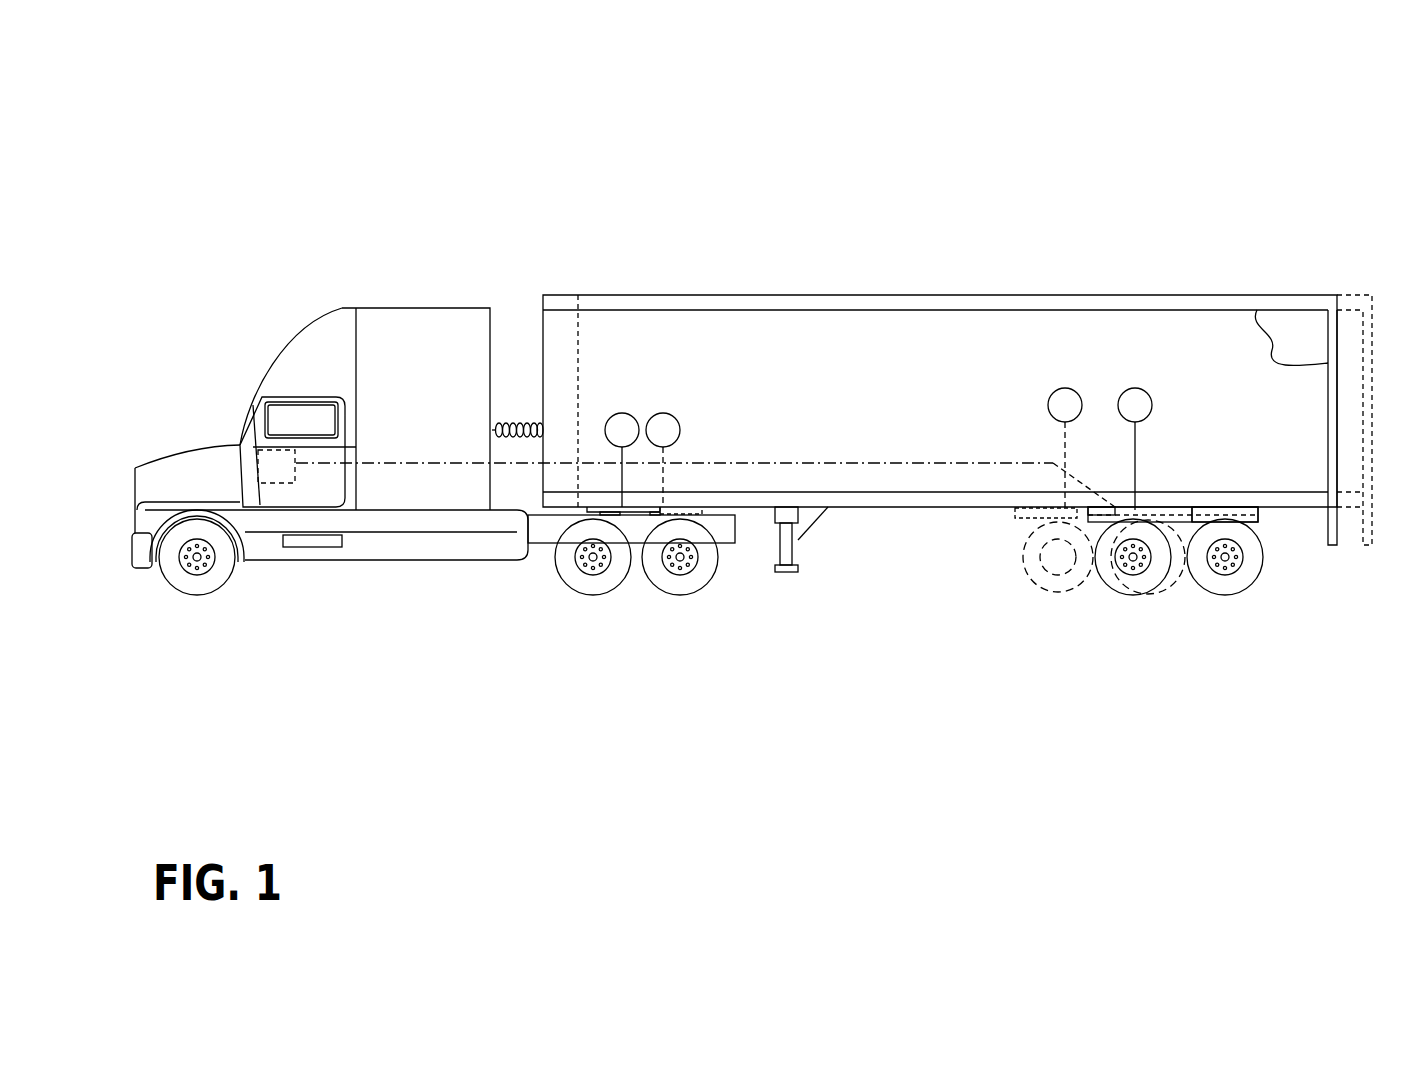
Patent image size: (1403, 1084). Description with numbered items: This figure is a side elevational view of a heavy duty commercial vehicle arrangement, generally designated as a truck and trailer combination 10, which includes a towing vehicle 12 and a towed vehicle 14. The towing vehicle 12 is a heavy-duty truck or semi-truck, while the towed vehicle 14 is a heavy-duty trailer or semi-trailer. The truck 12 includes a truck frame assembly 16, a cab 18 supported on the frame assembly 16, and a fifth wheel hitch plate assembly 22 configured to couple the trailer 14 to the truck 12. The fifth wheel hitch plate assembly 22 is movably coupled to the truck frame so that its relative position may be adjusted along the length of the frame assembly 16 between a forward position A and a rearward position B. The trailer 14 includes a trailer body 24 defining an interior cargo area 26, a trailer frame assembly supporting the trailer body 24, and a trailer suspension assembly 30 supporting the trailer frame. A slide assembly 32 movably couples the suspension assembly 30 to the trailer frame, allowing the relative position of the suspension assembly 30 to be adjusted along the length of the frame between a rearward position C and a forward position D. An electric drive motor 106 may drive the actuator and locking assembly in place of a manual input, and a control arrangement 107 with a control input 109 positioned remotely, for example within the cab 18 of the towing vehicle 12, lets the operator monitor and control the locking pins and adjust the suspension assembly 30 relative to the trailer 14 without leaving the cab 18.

The truck and trailer combination 10 is at (622, 195).
The towing vehicle 12 is at (382, 306).
The towed vehicle 14 is at (768, 293).
The truck frame assembly 16 is at (555, 543).
The cab 18 is at (247, 423).
The fifth wheel hitch plate assembly 22 is at (632, 525).
The trailer body 24 is at (945, 295).
The interior cargo area 26 is at (1293, 325).
The trailer suspension assembly 30 is at (1177, 600).
The slide assembly 32 is at (1205, 500).
The electric drive motor 106 is at (1123, 505).
The control arrangement 107 is at (222, 463).
The control input 109 is at (277, 483).